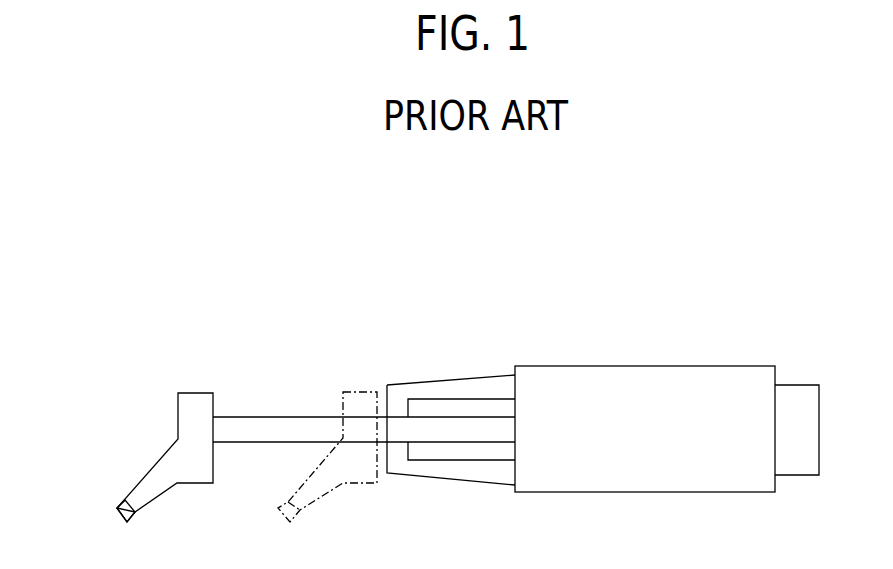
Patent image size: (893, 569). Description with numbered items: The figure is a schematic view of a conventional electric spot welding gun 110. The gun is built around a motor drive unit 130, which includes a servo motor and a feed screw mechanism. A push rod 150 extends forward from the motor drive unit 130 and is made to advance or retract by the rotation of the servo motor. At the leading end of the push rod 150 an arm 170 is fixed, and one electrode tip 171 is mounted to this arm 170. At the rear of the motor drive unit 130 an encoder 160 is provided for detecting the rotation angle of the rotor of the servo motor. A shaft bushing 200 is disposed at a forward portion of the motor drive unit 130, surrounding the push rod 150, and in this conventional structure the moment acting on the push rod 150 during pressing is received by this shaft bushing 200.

The electric spot welding gun 110 is at (612, 265).
The motor drive unit 130 is at (710, 382).
The push rod 150 is at (288, 427).
The encoder 160 is at (795, 400).
The arm 170 is at (190, 412).
The electrode tip 171 is at (120, 513).
The shaft bushing 200 is at (440, 407).